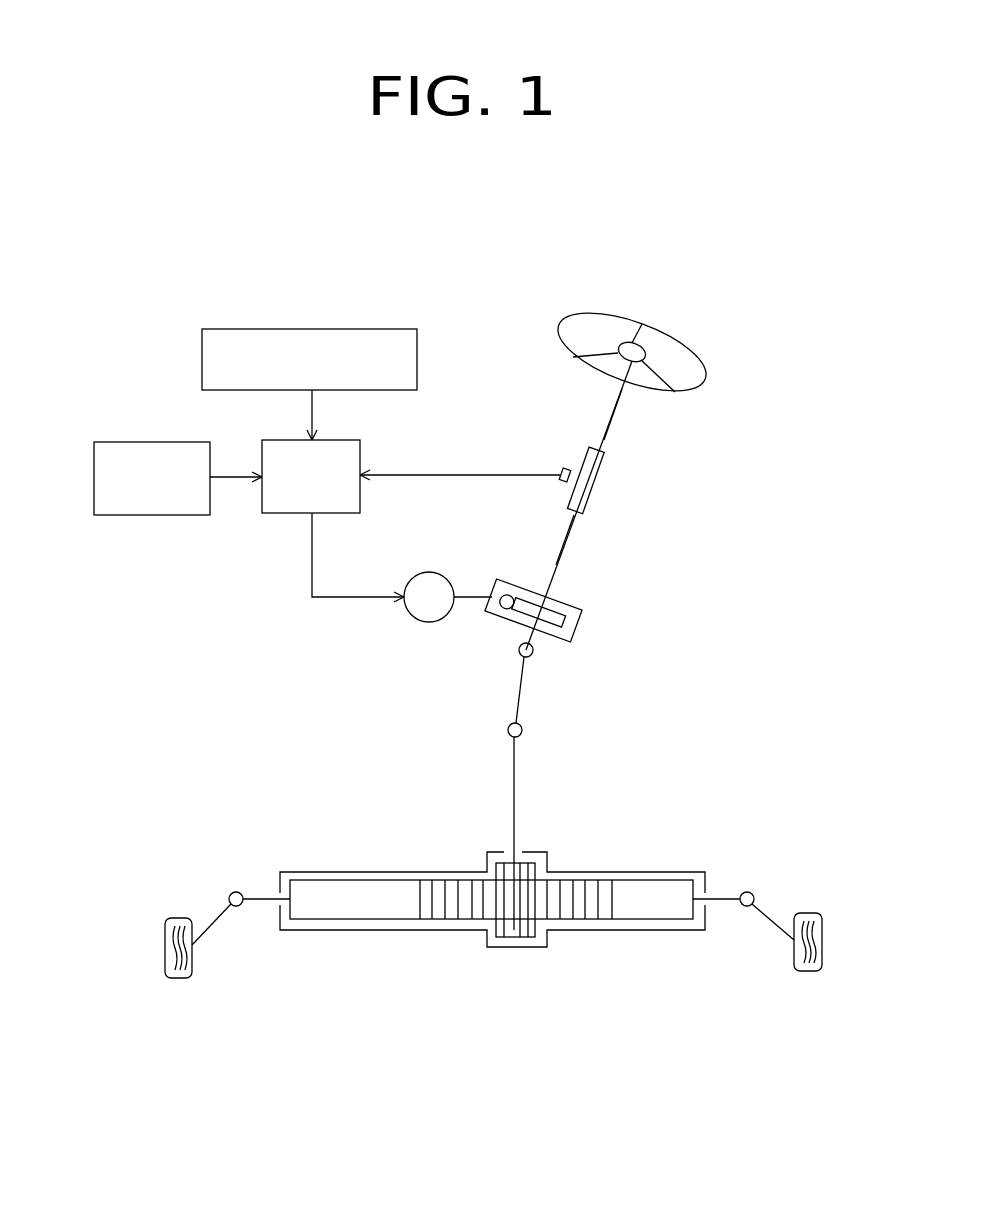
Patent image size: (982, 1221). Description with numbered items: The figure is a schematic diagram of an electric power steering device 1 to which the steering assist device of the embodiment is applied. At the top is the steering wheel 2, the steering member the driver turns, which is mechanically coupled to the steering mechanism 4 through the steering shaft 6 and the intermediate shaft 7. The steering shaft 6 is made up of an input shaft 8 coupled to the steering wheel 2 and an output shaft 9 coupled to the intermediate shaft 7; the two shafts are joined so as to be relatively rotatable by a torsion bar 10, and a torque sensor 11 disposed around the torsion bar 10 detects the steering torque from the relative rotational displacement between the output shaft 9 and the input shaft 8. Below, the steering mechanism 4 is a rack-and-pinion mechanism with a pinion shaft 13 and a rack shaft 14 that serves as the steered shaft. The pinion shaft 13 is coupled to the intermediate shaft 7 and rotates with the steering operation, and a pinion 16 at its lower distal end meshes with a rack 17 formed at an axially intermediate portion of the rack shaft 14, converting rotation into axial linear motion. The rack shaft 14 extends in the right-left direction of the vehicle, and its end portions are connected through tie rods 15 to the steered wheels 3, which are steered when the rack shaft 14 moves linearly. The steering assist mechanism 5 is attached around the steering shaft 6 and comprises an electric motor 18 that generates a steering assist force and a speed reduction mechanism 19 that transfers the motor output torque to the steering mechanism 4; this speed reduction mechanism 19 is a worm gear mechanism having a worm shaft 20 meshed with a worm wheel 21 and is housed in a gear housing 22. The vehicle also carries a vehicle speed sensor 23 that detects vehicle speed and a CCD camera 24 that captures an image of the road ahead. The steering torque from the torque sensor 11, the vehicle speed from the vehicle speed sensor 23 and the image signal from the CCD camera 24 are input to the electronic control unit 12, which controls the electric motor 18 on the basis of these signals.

The electric power steering device 1 is at (245, 292).
The steering wheel 2 is at (634, 312).
The steered wheels 3 is at (178, 918).
The steering mechanism 4 is at (548, 850).
The steering assist mechanism 5 is at (417, 521).
The steering shaft 6 is at (615, 407).
The intermediate shaft 7 is at (523, 702).
The input shaft 8 is at (604, 442).
The output shaft 9 is at (571, 537).
The torsion bar 10 is at (602, 488).
The torque sensor 11 is at (562, 470).
The electronic control unit 12 is at (360, 452).
The pinion shaft 13 is at (517, 800).
The rack shaft 14 is at (668, 905).
The tie rods 15 is at (218, 920).
The pinion 16 is at (518, 932).
The rack 17 is at (440, 912).
The electric motor 18 is at (431, 572).
The speed reduction mechanism 19 is at (514, 580).
The worm shaft 20 is at (497, 620).
The worm wheel 21 is at (574, 630).
The gear housing 22 is at (553, 645).
The vehicle speed sensor 23 is at (384, 329).
The CCD camera 24 is at (160, 442).